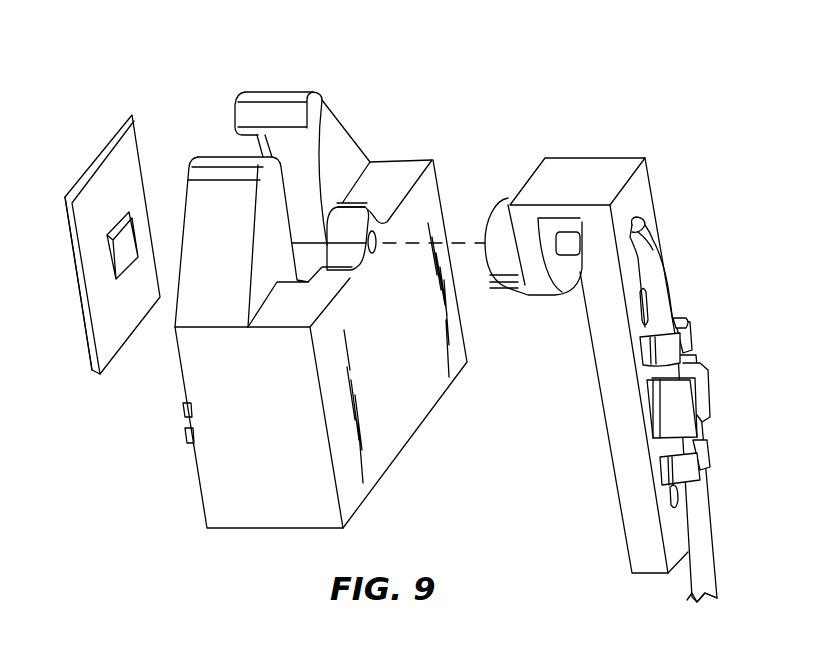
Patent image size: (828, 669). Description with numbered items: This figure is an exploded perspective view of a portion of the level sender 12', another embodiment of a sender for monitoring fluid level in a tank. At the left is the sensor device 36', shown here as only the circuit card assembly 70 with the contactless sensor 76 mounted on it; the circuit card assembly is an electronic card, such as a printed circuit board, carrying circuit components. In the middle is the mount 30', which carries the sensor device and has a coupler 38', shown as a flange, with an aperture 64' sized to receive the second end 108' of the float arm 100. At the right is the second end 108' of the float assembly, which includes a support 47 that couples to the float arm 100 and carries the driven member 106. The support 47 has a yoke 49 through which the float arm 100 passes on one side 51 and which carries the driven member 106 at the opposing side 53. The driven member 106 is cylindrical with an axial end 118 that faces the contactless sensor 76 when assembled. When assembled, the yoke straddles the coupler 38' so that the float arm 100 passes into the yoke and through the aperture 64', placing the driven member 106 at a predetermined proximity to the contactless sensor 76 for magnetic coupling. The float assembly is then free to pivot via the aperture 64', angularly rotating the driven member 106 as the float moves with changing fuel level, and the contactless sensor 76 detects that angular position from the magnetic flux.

The level sender 12' is at (472, 309).
The circuit card assembly 70 is at (78, 270).
The contactless sensor 76 is at (120, 268).
The sensor device 36' is at (86, 244).
The mount 30' is at (330, 342).
The coupler 38' is at (358, 261).
The aperture 64' is at (426, 257).
The axial end 118 is at (488, 220).
The opposing side 53 is at (518, 234).
The yoke 49 is at (568, 173).
The side 51 is at (637, 188).
The driven member 106 is at (505, 284).
The second end 108' is at (683, 272).
The support 47 is at (612, 352).
The float arm 100 is at (700, 558).